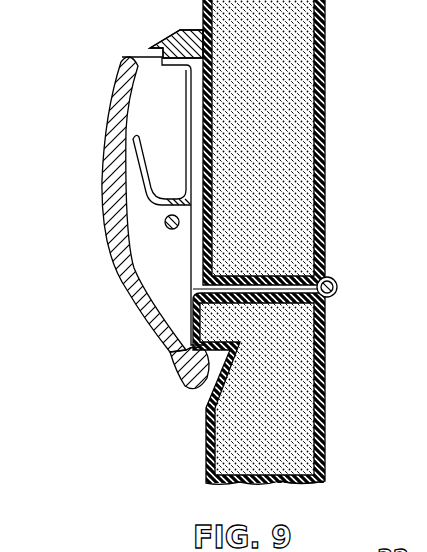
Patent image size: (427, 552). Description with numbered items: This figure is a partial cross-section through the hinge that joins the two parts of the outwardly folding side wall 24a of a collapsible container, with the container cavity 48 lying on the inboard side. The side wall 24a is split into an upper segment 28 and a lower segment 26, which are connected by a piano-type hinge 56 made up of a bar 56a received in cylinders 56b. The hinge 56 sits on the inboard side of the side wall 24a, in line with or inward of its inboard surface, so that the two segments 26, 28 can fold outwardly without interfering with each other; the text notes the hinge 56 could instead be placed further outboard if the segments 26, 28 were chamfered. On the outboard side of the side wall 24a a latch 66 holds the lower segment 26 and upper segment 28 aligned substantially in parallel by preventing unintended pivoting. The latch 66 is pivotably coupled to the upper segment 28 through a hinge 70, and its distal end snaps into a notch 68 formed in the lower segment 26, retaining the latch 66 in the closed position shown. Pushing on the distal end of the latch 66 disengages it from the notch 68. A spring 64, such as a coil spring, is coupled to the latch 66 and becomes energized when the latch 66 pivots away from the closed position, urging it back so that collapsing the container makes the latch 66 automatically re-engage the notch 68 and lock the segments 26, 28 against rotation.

The outwardly folding side wall 24a is at (172, 394).
The lower segment 26 is at (325, 391).
The upper segment 28 is at (324, 116).
The cavity 48 is at (398, 347).
The piano-type hinge 56 is at (330, 258).
The bar 56a is at (332, 280).
The cylinders 56b is at (337, 290).
The spring 64 is at (138, 165).
The latch 66 is at (131, 304).
The notch 68 is at (200, 353).
The hinge 70 is at (165, 222).